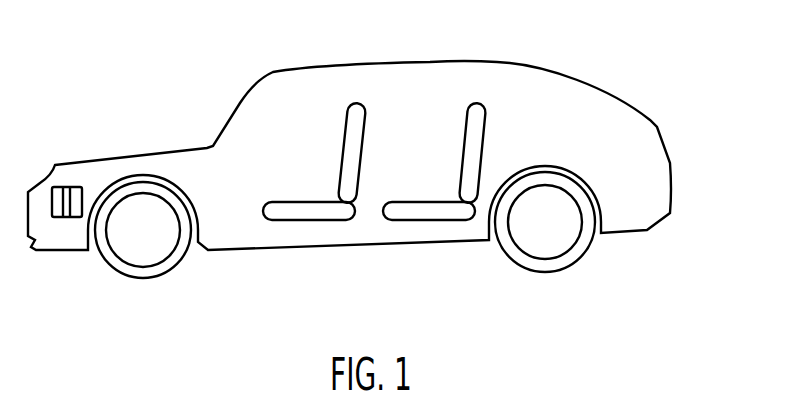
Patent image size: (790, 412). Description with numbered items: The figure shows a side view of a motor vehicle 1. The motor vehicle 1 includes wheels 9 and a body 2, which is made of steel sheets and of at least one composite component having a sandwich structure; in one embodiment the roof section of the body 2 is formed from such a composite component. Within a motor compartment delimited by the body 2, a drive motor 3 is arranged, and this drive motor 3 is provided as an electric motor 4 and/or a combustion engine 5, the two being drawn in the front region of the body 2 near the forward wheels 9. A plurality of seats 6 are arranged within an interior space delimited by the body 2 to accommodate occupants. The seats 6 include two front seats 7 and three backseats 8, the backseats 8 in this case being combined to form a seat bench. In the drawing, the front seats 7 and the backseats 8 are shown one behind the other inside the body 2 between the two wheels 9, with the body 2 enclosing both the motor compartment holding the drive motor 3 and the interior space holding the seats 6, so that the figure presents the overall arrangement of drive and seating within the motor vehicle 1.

The motor vehicle 1 is at (631, 278).
The body 2 is at (168, 150).
The drive motor 3 is at (82, 163).
The electric motor 4 is at (62, 195).
The combustion engine 5 is at (78, 187).
The seats 6 is at (396, 117).
The front seats 7 is at (352, 103).
The backseats 8 is at (487, 108).
The wheels 9 is at (140, 255).